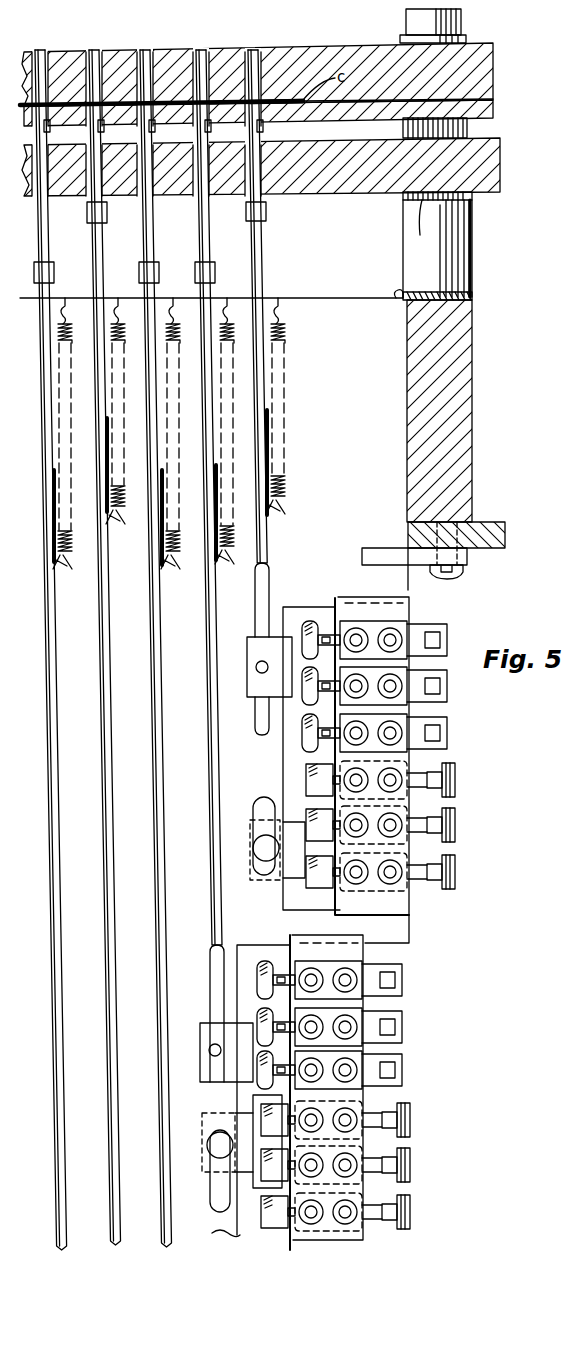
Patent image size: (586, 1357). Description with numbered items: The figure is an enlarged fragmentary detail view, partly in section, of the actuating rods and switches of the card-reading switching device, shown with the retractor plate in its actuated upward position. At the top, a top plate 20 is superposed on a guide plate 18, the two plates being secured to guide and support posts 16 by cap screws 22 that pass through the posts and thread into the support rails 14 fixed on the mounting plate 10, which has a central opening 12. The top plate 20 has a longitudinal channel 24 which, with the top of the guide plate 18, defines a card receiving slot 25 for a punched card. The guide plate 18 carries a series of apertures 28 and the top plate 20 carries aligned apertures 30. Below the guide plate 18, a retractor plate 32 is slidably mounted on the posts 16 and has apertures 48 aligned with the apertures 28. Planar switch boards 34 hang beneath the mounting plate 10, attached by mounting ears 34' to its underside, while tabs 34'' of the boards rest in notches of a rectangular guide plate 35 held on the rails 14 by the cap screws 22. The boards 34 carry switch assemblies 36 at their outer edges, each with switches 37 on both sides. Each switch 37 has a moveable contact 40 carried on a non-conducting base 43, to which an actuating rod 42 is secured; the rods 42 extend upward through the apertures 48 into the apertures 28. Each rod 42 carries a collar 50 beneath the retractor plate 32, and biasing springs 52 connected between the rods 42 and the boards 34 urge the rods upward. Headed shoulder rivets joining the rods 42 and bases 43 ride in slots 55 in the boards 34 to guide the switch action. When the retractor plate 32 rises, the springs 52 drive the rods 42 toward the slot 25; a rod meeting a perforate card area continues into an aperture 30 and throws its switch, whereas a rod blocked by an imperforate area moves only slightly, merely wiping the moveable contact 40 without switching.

The mounting plate 10 is at (492, 523).
The central opening 12 is at (406, 532).
The support rails 14 is at (474, 382).
The guide and support posts 16 is at (472, 246).
The guide plate 18 is at (490, 110).
The top plate 20 is at (487, 72).
The cap screws 22 is at (405, 18).
The longitudinal channel 24 is at (104, 102).
The card receiving slot 25 is at (270, 100).
The apertures 28 is at (44, 126).
The apertures 30 is at (46, 56).
The retractor plate 32 is at (497, 168).
The switch boards 34 is at (211, 283).
The mounting ears 34' is at (396, 563).
The tabs 34'' is at (386, 283).
The rectangular guide plate 35 is at (403, 300).
The switch assemblies 36 is at (340, 604).
The switches 37 is at (416, 630).
The moveable contact 40 is at (304, 690).
The actuating rod 42 is at (56, 845).
The non-conducting base 43 is at (246, 645).
The apertures 48 is at (88, 173).
The collar 50 is at (54, 270).
The biasing springs 52 is at (286, 452).
The slots 55 is at (262, 798).